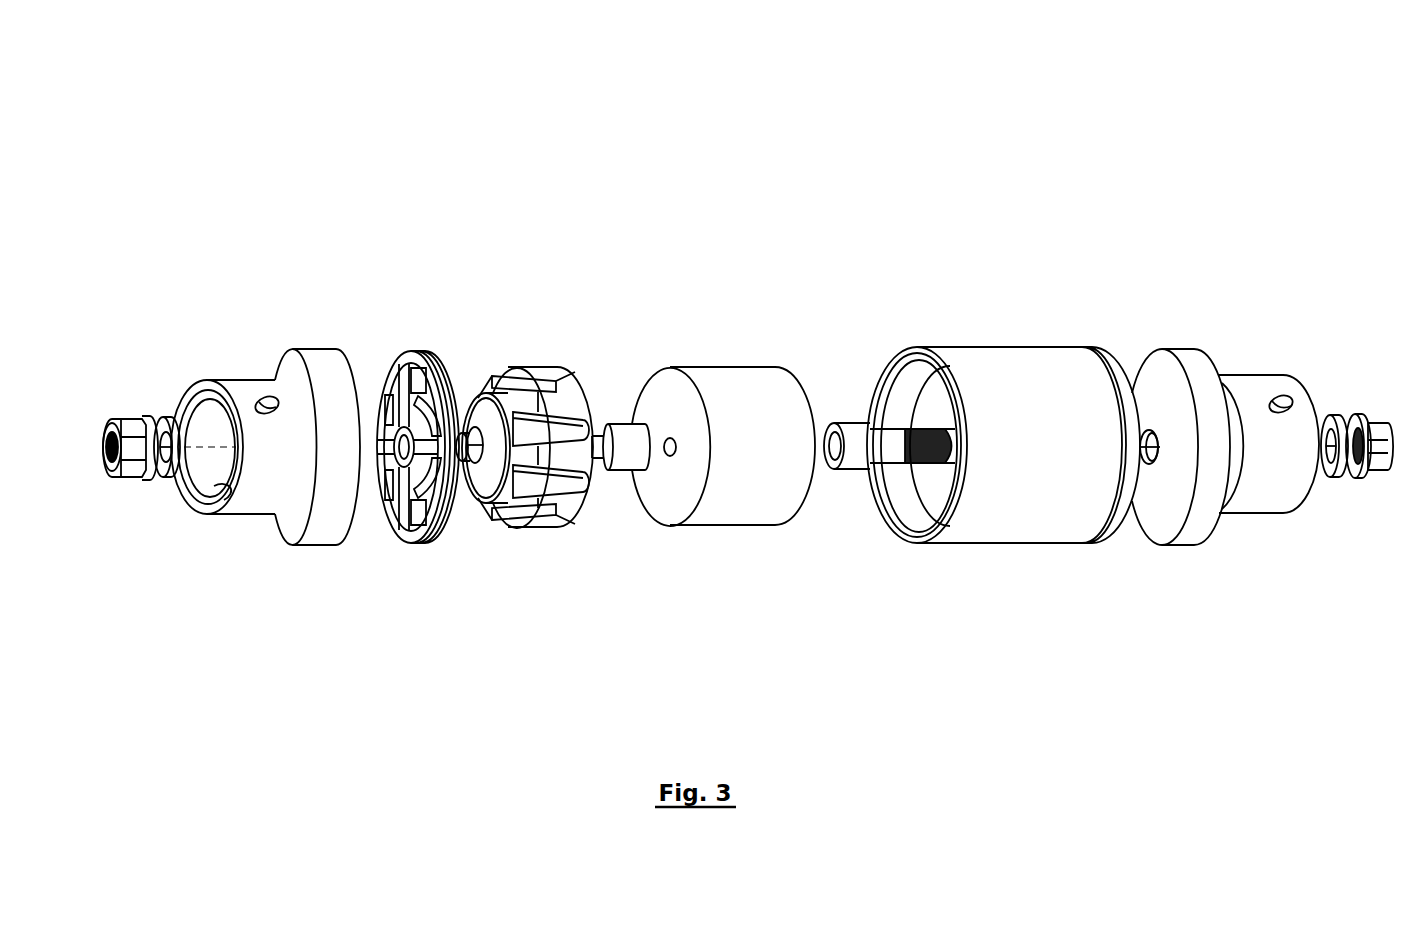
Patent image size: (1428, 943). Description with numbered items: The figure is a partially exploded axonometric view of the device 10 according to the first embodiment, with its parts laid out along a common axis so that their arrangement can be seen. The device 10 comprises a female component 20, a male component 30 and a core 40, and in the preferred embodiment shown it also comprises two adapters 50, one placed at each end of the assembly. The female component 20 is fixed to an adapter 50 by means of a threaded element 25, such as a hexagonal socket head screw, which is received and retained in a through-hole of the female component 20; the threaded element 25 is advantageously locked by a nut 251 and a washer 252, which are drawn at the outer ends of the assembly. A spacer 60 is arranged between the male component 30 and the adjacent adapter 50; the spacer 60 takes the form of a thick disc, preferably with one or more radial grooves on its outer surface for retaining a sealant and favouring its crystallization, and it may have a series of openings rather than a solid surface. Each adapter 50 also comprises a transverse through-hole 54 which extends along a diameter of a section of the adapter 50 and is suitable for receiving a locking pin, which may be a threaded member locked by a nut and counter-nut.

The device 10 is at (739, 155).
The female component 20 is at (985, 319).
The threaded element 25 is at (603, 399).
The male component 30 is at (519, 560).
The core 40 is at (699, 345).
The adapter 50 is at (287, 335).
The transverse through-hole 54 is at (255, 388).
The spacer 60 is at (406, 332).
The nut 251 is at (126, 420).
The washer 252 is at (171, 481).